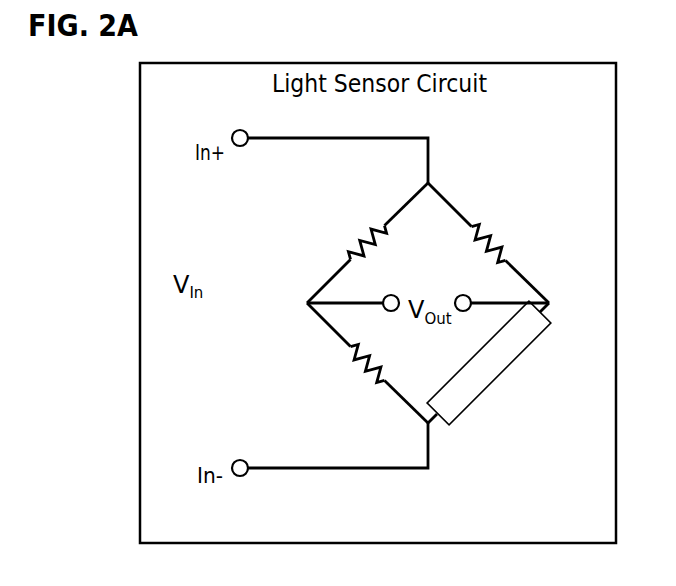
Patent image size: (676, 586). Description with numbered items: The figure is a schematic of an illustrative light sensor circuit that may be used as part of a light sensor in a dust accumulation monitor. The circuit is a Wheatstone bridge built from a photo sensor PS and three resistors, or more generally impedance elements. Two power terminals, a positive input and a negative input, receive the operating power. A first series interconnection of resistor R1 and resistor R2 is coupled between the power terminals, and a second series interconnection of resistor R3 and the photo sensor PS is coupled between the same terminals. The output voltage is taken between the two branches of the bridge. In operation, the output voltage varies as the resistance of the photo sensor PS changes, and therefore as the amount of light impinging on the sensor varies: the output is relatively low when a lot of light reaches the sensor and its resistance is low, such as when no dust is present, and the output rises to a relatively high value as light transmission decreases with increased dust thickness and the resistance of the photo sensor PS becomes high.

The resistor R1 is at (357, 237).
The resistor R2 is at (357, 368).
The resistor R3 is at (498, 236).
The photo sensor PS is at (489, 363).